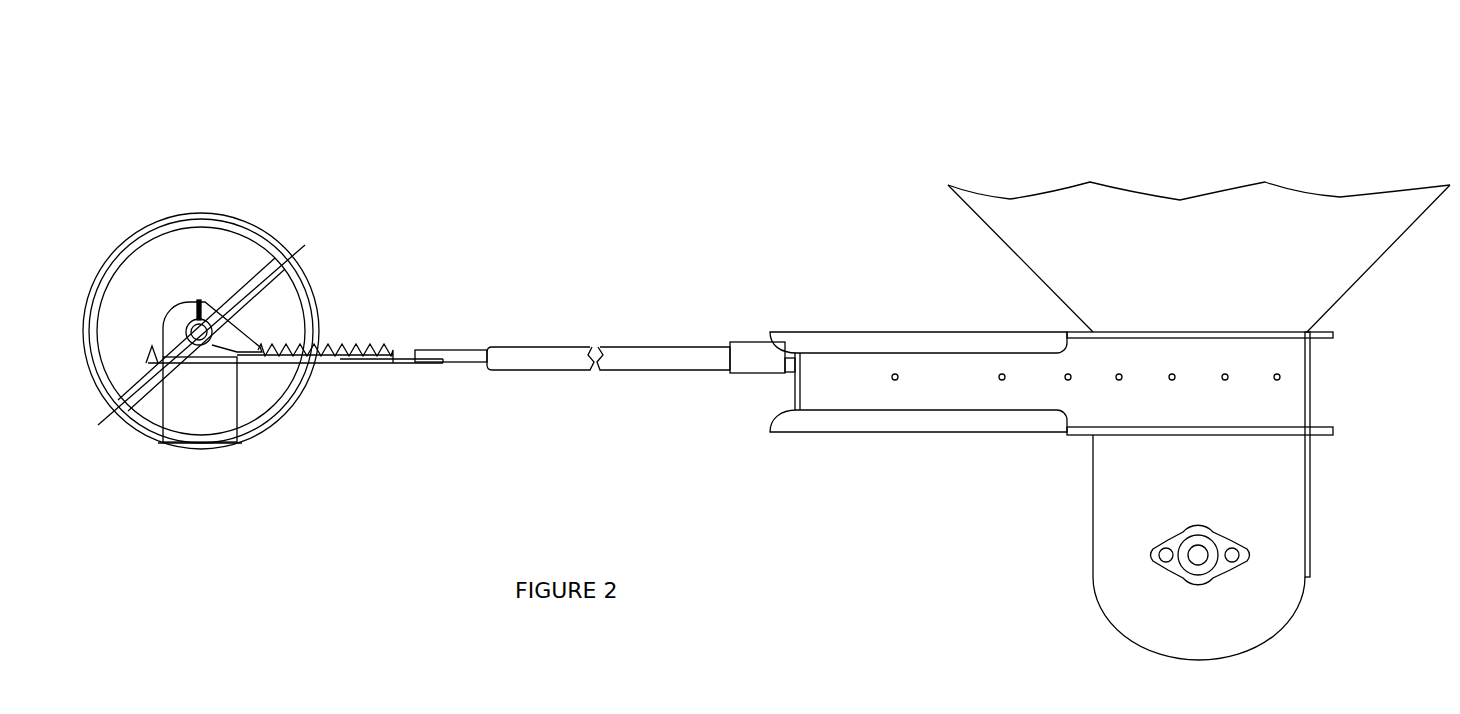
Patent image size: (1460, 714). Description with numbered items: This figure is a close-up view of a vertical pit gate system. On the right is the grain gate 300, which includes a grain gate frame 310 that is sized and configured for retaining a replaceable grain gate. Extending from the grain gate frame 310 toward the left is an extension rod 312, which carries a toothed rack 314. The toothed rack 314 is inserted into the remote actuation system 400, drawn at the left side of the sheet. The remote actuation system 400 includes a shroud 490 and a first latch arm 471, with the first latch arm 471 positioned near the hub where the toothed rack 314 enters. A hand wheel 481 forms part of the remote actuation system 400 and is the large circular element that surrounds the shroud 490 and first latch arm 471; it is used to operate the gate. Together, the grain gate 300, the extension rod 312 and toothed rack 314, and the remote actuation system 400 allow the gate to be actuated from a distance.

The grain gate 300 is at (1078, 123).
The grain gate frame 310 is at (922, 312).
The extension rod 312 is at (596, 325).
The toothed rack 314 is at (350, 345).
The remote actuation system 400 is at (148, 172).
The hand wheel 481 is at (225, 217).
The first latch arm 471 is at (247, 332).
The shroud 490 is at (200, 400).